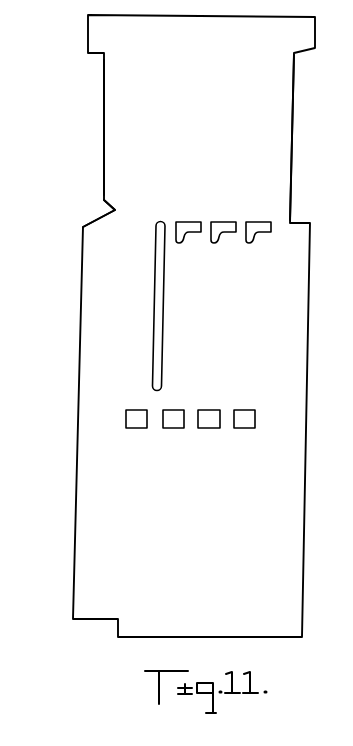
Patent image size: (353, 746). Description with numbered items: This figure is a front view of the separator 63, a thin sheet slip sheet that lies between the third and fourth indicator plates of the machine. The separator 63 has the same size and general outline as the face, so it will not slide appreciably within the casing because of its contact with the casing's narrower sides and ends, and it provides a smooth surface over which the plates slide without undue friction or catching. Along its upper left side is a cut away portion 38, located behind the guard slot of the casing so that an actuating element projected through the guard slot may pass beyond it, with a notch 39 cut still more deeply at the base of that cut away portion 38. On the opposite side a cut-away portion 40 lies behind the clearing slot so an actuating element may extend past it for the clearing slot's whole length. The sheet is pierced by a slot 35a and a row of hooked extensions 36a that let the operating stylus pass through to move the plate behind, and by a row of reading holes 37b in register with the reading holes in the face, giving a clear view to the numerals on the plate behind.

The slot 35a is at (165, 312).
The hooked extension 36a is at (248, 222).
The reading hole 37b is at (208, 423).
The cut away portion 38 is at (102, 122).
The notch 39 is at (112, 212).
The cut-away portion 40 is at (292, 128).
The separator 63 is at (290, 528).